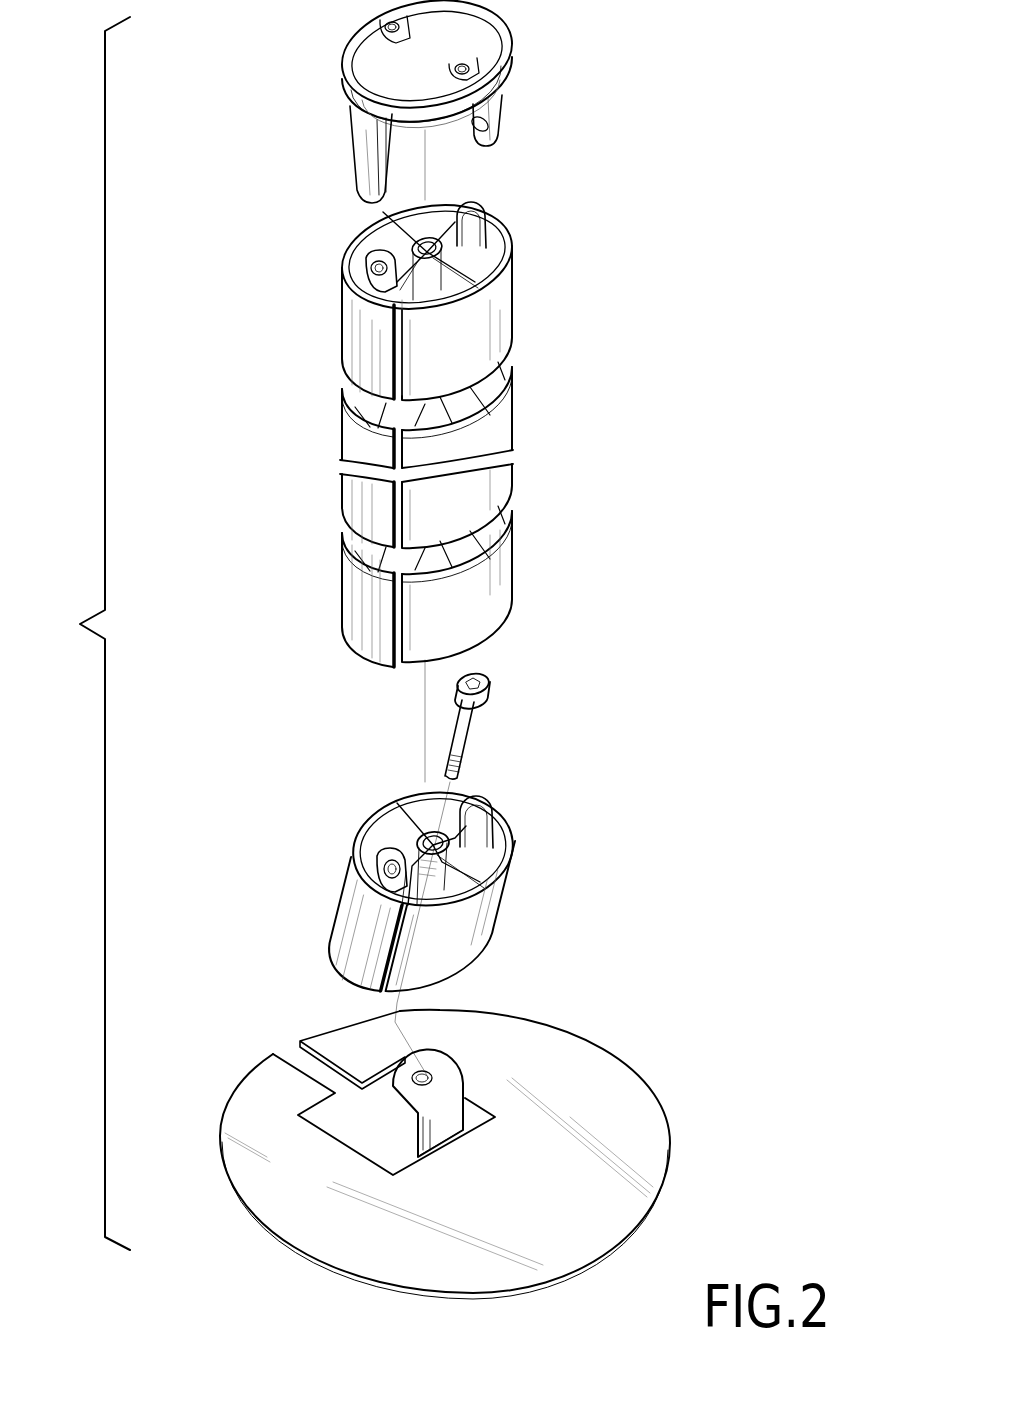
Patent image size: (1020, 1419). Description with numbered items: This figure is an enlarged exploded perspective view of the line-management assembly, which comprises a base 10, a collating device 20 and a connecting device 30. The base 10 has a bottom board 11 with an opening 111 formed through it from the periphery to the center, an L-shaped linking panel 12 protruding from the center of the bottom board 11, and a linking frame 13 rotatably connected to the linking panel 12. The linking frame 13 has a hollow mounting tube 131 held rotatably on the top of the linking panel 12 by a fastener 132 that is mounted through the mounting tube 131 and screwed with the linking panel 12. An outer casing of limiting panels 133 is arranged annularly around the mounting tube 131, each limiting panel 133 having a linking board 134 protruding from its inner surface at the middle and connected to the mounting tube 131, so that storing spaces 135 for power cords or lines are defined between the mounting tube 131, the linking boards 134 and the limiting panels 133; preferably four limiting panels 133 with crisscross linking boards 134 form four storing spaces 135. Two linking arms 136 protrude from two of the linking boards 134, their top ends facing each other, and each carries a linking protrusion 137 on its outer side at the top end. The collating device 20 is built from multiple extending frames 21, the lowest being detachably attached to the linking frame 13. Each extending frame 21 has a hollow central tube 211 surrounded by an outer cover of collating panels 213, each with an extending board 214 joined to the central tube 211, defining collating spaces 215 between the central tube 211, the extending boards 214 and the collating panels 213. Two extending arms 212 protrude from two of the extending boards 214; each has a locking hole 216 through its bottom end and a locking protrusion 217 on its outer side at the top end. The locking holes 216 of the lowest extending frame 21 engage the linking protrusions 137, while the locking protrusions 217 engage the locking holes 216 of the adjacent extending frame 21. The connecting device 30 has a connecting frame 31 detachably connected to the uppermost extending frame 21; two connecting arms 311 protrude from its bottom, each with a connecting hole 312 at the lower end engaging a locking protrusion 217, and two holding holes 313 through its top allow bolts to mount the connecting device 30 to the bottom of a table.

The base 10 is at (664, 1063).
The bottom board 11 is at (664, 1150).
The linking panel 12 is at (434, 1077).
The opening 111 is at (372, 1158).
The linking frame 13 is at (556, 858).
The mounting tube 131 is at (429, 890).
The fastener 132 is at (463, 733).
The limiting panels 133 is at (345, 930).
The linking board 134 is at (456, 884).
The storing spaces 135 is at (374, 843).
The linking arms 136 is at (482, 816).
The linking protrusion 137 is at (386, 868).
The collating device 20 is at (268, 505).
The extending frame 21 is at (325, 318).
The central tube 211 is at (431, 273).
The extending arms 212 is at (476, 216).
The collating panels 213 is at (352, 365).
The extending board 214 is at (451, 265).
The collating spaces 215 is at (367, 246).
The locking hole 216 is at (362, 672).
The locking protrusion 217 is at (372, 270).
The connecting device 30 is at (322, 143).
The connecting frame 31 is at (346, 90).
The connecting arms 311 is at (498, 108).
The connecting hole 312 is at (481, 128).
The holding holes 313 is at (388, 29).